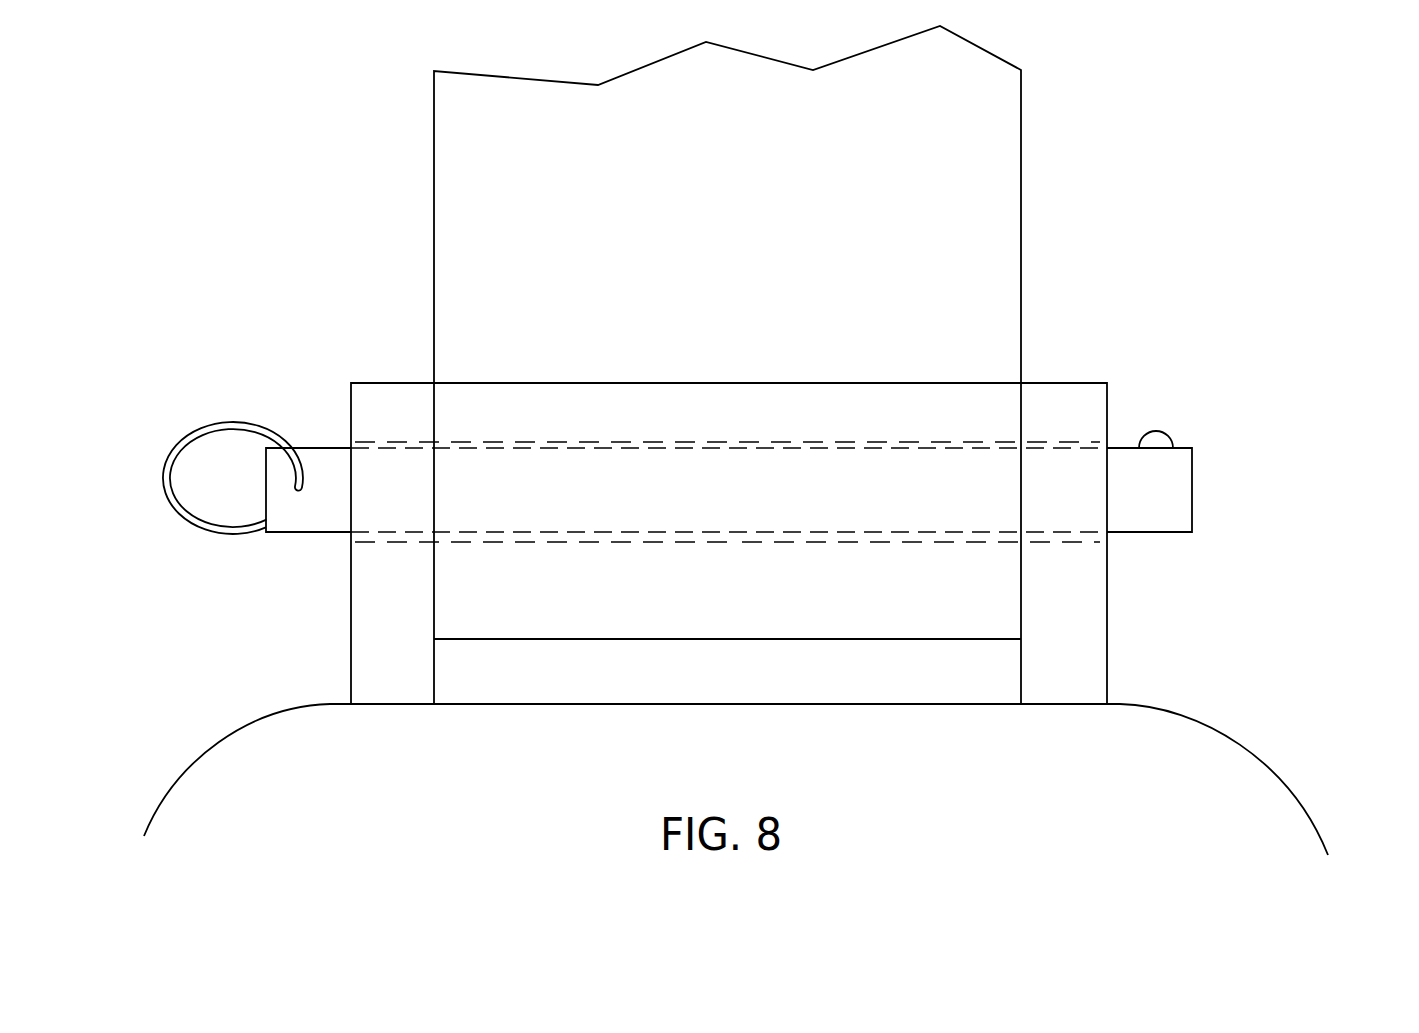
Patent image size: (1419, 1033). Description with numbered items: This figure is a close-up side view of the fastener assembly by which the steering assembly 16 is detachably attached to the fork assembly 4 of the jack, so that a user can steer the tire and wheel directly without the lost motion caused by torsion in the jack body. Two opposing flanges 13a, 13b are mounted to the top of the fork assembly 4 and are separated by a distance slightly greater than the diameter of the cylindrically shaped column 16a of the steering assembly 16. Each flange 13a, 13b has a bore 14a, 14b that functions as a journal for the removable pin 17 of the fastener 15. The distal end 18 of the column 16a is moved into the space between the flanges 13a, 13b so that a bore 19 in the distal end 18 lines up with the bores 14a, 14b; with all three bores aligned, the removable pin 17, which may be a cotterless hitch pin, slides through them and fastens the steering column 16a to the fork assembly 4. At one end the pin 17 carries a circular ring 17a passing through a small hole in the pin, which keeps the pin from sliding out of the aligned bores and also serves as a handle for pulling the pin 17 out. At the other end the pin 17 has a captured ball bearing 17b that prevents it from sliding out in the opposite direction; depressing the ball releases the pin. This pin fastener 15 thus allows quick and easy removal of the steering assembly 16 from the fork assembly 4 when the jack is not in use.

The fork assembly 4 is at (1193, 779).
The flange 13a is at (393, 600).
The flange 13b is at (1062, 600).
The bore 14a is at (370, 557).
The bore 14b is at (1072, 540).
The fastener 15 is at (1194, 483).
The steering assembly 16 is at (1083, 301).
The column 16a is at (727, 365).
The removable pin 17 is at (808, 504).
The circular ring 17a is at (222, 425).
The captured ball bearing 17b is at (1163, 432).
The distal end 18 is at (685, 639).
The bore 19 is at (510, 438).